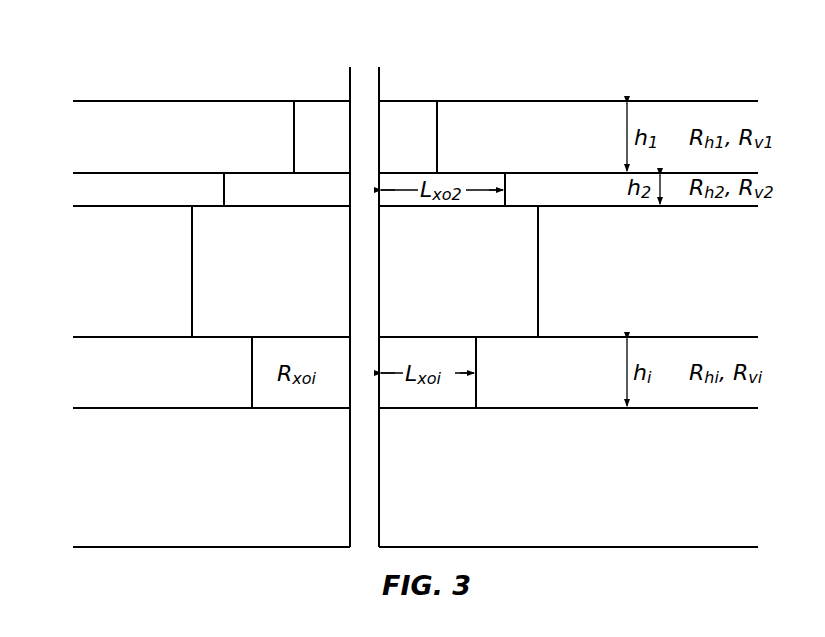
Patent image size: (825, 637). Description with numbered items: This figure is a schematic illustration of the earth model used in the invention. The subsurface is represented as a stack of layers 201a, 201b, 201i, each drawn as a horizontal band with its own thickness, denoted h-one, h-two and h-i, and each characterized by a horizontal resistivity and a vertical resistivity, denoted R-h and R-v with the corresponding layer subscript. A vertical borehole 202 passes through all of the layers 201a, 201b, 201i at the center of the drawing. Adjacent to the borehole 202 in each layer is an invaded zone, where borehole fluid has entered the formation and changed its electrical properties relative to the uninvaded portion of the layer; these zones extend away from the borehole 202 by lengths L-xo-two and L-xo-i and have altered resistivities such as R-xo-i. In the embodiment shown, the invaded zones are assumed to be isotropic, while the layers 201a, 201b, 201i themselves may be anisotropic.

The borehole 202 is at (367, 70).
The layer 201a is at (138, 152).
The layer 201b is at (138, 199).
The layer 201i is at (134, 384).